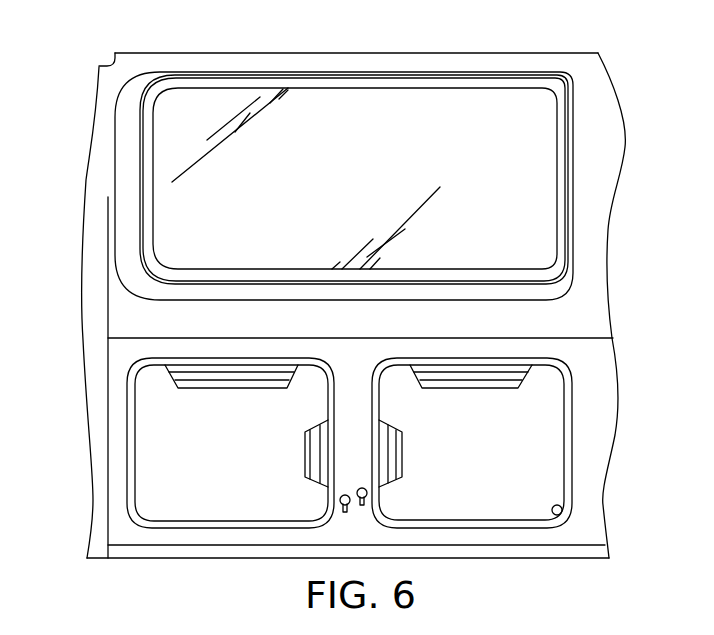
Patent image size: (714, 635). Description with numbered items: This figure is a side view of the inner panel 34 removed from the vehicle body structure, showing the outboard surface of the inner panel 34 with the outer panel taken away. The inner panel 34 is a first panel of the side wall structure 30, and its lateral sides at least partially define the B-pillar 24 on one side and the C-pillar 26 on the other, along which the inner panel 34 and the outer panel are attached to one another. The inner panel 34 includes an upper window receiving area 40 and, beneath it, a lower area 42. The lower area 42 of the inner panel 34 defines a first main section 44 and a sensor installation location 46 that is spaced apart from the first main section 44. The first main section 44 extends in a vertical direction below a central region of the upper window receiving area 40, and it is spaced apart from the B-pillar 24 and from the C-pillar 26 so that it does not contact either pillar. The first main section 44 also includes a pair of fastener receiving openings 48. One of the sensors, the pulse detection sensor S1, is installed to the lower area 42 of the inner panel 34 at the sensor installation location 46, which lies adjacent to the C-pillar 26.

The side wall structure 30 is at (348, 280).
The B-pillar 24 is at (95, 295).
The C-pillar 26 is at (590, 213).
The inner panel 34 is at (583, 315).
The upper window receiving area 40 is at (562, 165).
The lower area 42 is at (387, 433).
The first main section 44 is at (500, 443).
The sensor installation location 46 is at (565, 498).
The fastener receiving openings 48 is at (362, 485).
The pulse detection sensor S1 is at (561, 514).